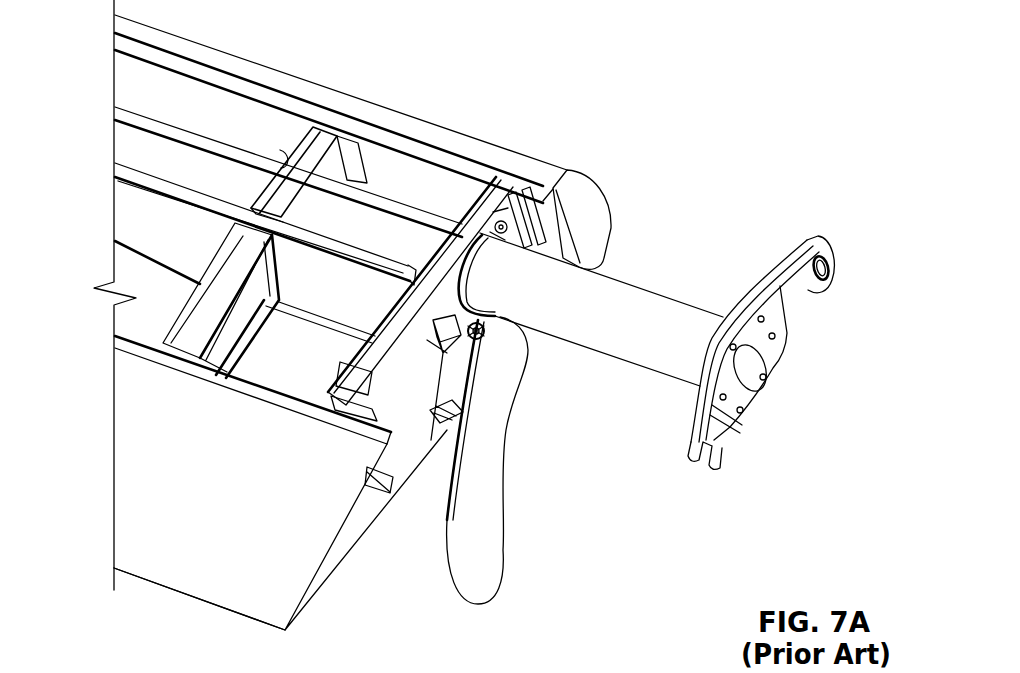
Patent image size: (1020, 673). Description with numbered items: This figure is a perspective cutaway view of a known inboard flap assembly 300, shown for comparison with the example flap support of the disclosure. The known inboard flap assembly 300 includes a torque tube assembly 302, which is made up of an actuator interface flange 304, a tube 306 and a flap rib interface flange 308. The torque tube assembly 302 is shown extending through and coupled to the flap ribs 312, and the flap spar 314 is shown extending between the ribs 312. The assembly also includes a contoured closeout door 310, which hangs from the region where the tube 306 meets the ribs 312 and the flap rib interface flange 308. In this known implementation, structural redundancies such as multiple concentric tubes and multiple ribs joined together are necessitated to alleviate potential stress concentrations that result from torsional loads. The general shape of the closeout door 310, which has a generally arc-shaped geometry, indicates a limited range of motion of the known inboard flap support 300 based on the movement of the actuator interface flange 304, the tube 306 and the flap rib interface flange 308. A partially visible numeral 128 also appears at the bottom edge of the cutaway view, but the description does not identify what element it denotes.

The inboard flap assembly 300 is at (76, 630).
The tray 128 is at (318, 672).
The torque tube assembly 302 is at (610, 320).
The actuator interface flange 304 is at (793, 300).
The tube 306 is at (667, 313).
The flap rib interface flange 308 is at (498, 216).
The contoured closeout door 310 is at (488, 532).
The flap ribs 312 is at (313, 133).
The flap spar 314 is at (318, 280).